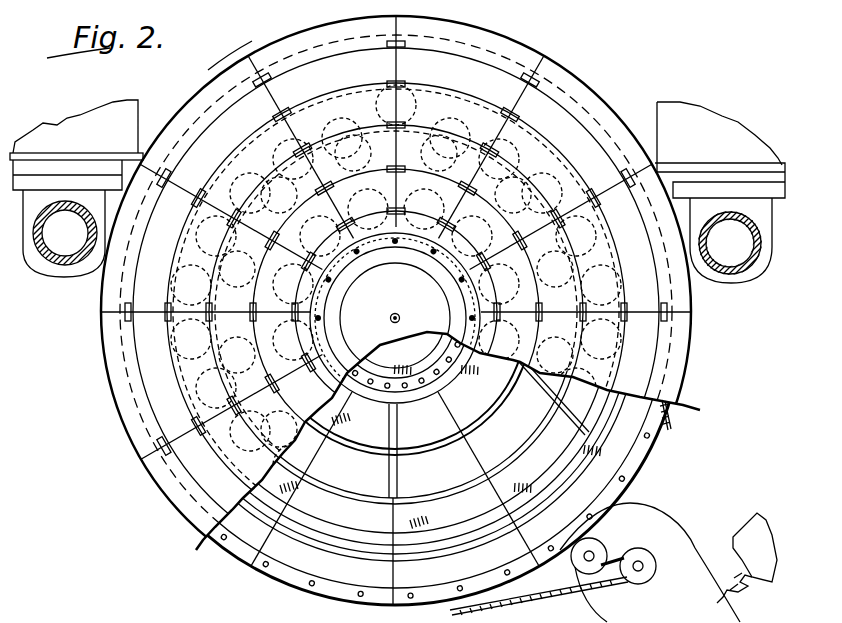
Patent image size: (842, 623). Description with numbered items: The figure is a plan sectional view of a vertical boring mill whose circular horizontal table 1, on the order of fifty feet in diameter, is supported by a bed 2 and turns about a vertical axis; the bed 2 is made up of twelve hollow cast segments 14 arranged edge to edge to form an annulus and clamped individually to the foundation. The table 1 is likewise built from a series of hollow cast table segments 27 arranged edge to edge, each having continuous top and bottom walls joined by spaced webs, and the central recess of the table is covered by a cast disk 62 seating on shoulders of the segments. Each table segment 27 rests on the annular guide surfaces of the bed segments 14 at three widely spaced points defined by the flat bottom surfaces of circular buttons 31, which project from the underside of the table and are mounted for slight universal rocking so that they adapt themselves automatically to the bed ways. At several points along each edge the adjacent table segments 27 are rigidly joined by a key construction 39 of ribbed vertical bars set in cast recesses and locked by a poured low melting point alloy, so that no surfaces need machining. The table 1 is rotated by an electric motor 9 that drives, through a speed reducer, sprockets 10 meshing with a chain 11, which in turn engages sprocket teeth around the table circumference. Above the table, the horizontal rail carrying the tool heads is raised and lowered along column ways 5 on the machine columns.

The table 1 is at (528, 50).
The bed 2 is at (232, 559).
The column ways 5 is at (55, 262).
The electric motor 9 is at (748, 528).
The sprockets 10 is at (652, 549).
The chain 11 is at (203, 548).
The segments 14 is at (300, 570).
The table segments 27 is at (214, 82).
The circular buttons 31 is at (212, 272).
The key construction 39 is at (306, 153).
The cast disk 62 is at (401, 299).